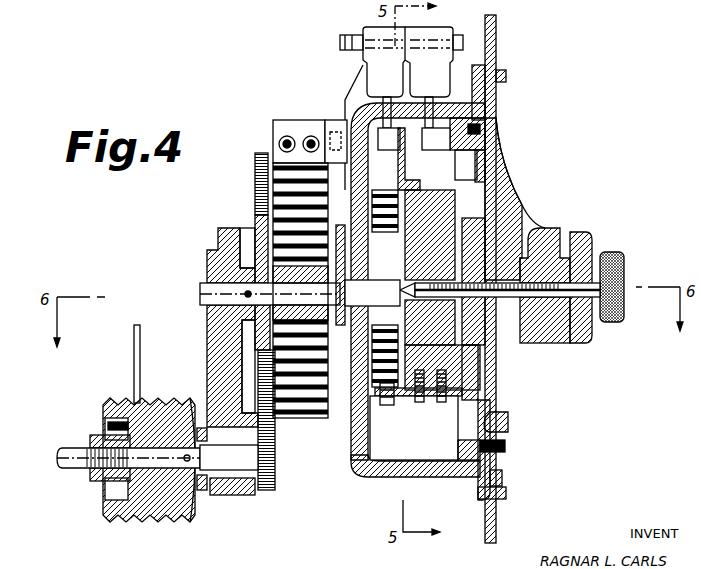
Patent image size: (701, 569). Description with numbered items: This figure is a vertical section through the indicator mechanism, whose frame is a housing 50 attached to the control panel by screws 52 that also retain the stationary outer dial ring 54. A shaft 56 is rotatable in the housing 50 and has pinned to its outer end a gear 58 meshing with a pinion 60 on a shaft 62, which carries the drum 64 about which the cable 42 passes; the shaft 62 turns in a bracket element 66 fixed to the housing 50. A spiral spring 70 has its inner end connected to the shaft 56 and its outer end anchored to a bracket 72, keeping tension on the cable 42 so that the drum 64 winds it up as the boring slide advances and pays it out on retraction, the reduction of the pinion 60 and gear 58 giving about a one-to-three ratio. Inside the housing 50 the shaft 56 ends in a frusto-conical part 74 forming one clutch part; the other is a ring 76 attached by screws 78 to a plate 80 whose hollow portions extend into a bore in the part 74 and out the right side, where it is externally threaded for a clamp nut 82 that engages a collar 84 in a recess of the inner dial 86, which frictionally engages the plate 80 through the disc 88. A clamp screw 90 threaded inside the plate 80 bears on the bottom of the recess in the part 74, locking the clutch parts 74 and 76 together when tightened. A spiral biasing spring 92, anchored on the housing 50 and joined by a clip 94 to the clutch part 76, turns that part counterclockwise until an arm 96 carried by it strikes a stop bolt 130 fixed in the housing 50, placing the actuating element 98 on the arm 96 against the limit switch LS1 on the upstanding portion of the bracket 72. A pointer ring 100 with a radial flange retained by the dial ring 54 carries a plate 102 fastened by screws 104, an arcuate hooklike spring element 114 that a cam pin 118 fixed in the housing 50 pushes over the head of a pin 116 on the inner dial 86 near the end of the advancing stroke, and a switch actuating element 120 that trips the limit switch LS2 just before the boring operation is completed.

The limit switch LS1 is at (375, 78).
The limit switch LS2 is at (448, 70).
The cable 42 is at (140, 366).
The housing 50 is at (368, 478).
The screws 52 is at (506, 78).
The outer dial ring 54 is at (505, 478).
The shaft 56 is at (207, 300).
The gear 58 is at (260, 158).
The pinion 60 is at (275, 467).
The shaft 62 is at (237, 496).
The drum 64 is at (165, 522).
The bracket element 66 is at (207, 267).
The spiral spring 70 is at (310, 418).
The bracket 72 is at (275, 128).
The frusto-conical end part 74 is at (395, 291).
The ring 76 is at (508, 186).
The screws 78 is at (528, 208).
The plate 80 is at (496, 372).
The clamp nut 82 is at (592, 233).
The collar 84 is at (562, 233).
The inner dial 86 is at (552, 345).
The disc 88 is at (520, 350).
The clamp screw 90 is at (625, 256).
The spiral biasing spring 92 is at (427, 400).
The clip 94 is at (403, 400).
The arm 96 is at (408, 152).
The limit switch actuating element 98 is at (392, 152).
The ring 100 is at (492, 428).
The plate 102 is at (505, 460).
The screws 104 is at (505, 452).
The arcuate hooklike spring element 114 is at (508, 148).
The pin 116 is at (500, 160).
The cam pin 118 is at (500, 130).
The switch actuating element 120 is at (488, 104).
The stop bolt 130 is at (373, 135).